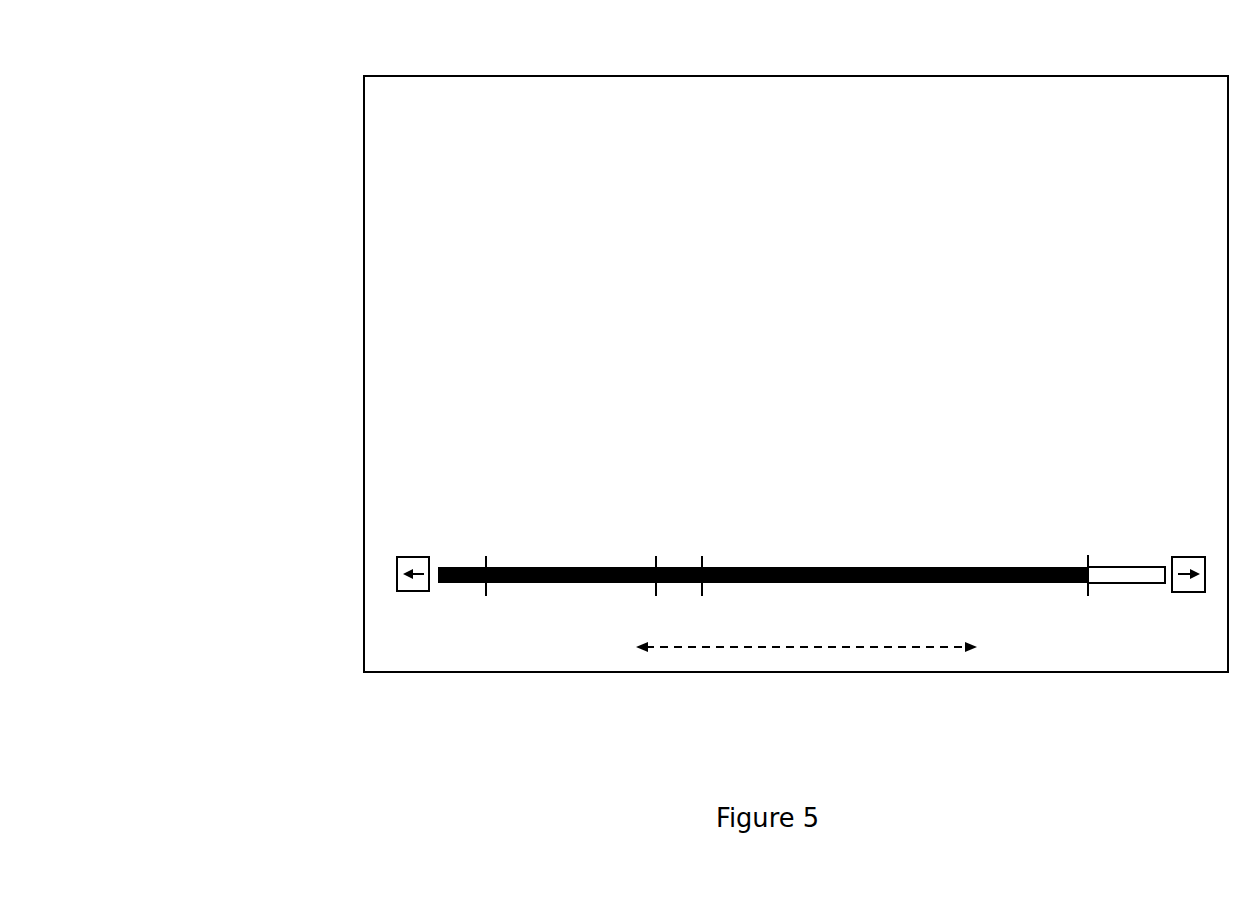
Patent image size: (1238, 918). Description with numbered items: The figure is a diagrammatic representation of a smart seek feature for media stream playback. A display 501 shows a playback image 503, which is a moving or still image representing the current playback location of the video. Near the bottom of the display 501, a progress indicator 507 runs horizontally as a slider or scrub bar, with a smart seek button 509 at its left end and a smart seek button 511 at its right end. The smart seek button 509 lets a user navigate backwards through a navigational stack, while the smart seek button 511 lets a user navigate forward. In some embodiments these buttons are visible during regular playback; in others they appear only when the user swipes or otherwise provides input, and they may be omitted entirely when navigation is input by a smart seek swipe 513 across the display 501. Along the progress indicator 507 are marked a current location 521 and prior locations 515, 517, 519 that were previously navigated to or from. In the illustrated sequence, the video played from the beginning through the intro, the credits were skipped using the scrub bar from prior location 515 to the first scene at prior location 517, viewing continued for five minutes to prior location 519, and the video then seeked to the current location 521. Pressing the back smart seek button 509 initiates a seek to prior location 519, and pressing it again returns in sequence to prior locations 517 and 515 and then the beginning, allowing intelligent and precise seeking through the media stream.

The display 501 is at (364, 130).
The playback image 503 is at (407, 290).
The progress indicator 507 is at (450, 583).
The smart seek button 509 is at (397, 580).
The smart seek button 511 is at (1184, 592).
The smart seek swipe 513 is at (806, 636).
The prior location 515 is at (486, 592).
The prior location 517 is at (655, 596).
The prior location 519 is at (702, 596).
The current location 521 is at (1088, 596).